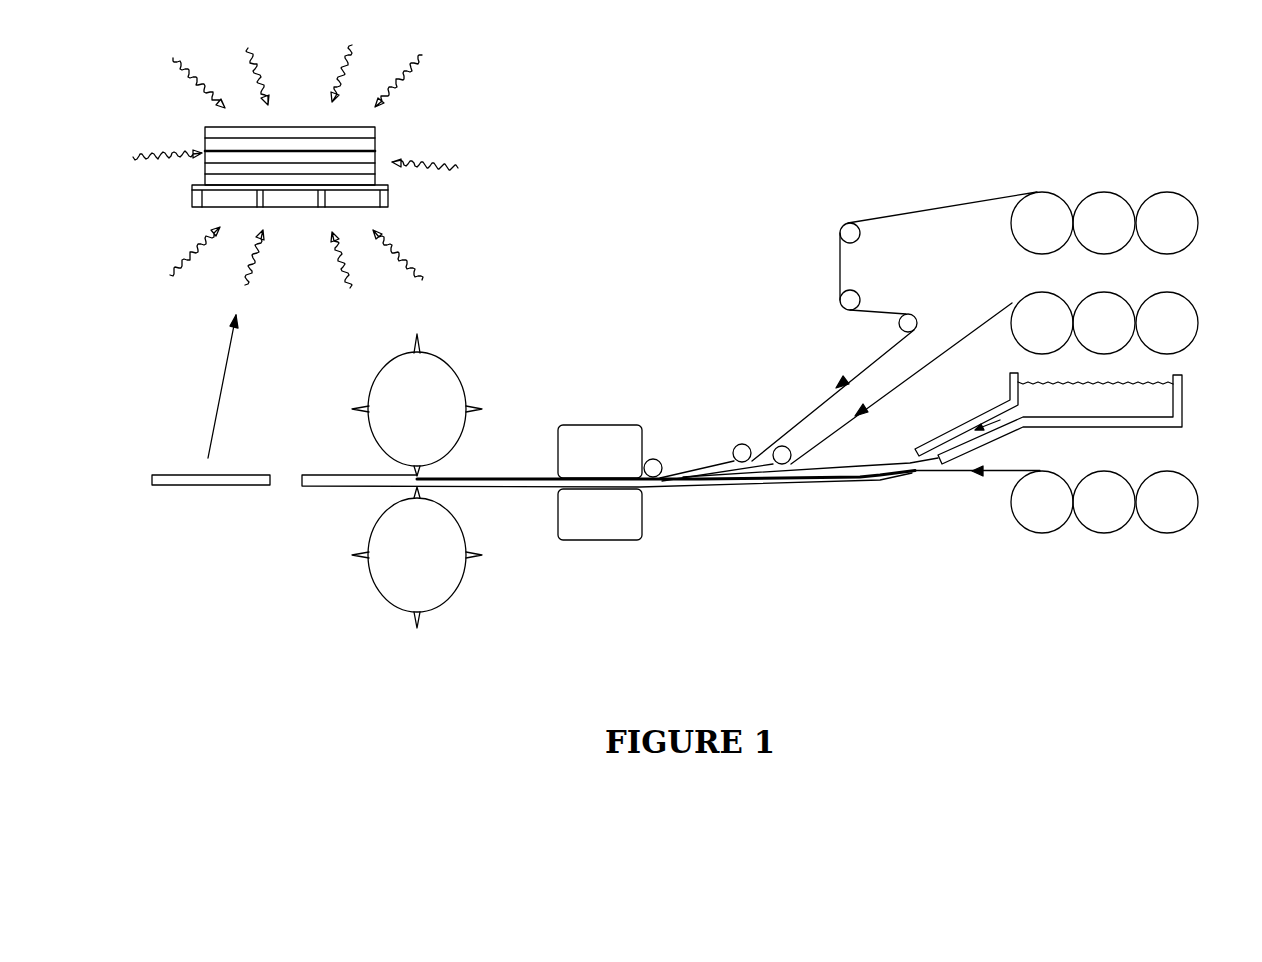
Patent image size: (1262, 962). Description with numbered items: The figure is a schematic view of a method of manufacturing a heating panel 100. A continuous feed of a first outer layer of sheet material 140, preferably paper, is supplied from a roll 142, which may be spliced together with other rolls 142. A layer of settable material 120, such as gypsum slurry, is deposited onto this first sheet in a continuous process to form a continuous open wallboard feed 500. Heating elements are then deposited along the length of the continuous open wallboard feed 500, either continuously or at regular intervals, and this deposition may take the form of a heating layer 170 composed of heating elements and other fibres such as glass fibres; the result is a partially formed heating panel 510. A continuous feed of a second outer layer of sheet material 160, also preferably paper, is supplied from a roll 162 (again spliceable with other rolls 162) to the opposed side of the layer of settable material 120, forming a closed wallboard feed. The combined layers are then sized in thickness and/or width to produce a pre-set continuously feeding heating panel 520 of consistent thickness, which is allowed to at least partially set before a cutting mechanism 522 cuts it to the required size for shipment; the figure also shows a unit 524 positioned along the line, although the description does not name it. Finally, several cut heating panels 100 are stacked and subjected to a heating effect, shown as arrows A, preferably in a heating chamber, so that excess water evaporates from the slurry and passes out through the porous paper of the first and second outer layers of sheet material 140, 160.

The heating panel 100 is at (377, 164).
The arrows indicating heating effect A is at (405, 250).
The layer of settable material 120 is at (856, 486).
The first outer layer of sheet material 140 is at (1060, 546).
The roll 142 is at (1043, 515).
The second outer layer of sheet material 160 is at (897, 210).
The roll 162 is at (1169, 207).
The heating layer 170 is at (920, 365).
The continuous open wallboard feed 500 is at (805, 495).
The partially formed heating panel 510 is at (656, 501).
The pre-set continuously feeding heating panel 520 is at (390, 505).
The cutting mechanism 522 is at (385, 504).
The heating unit 524 is at (597, 410).